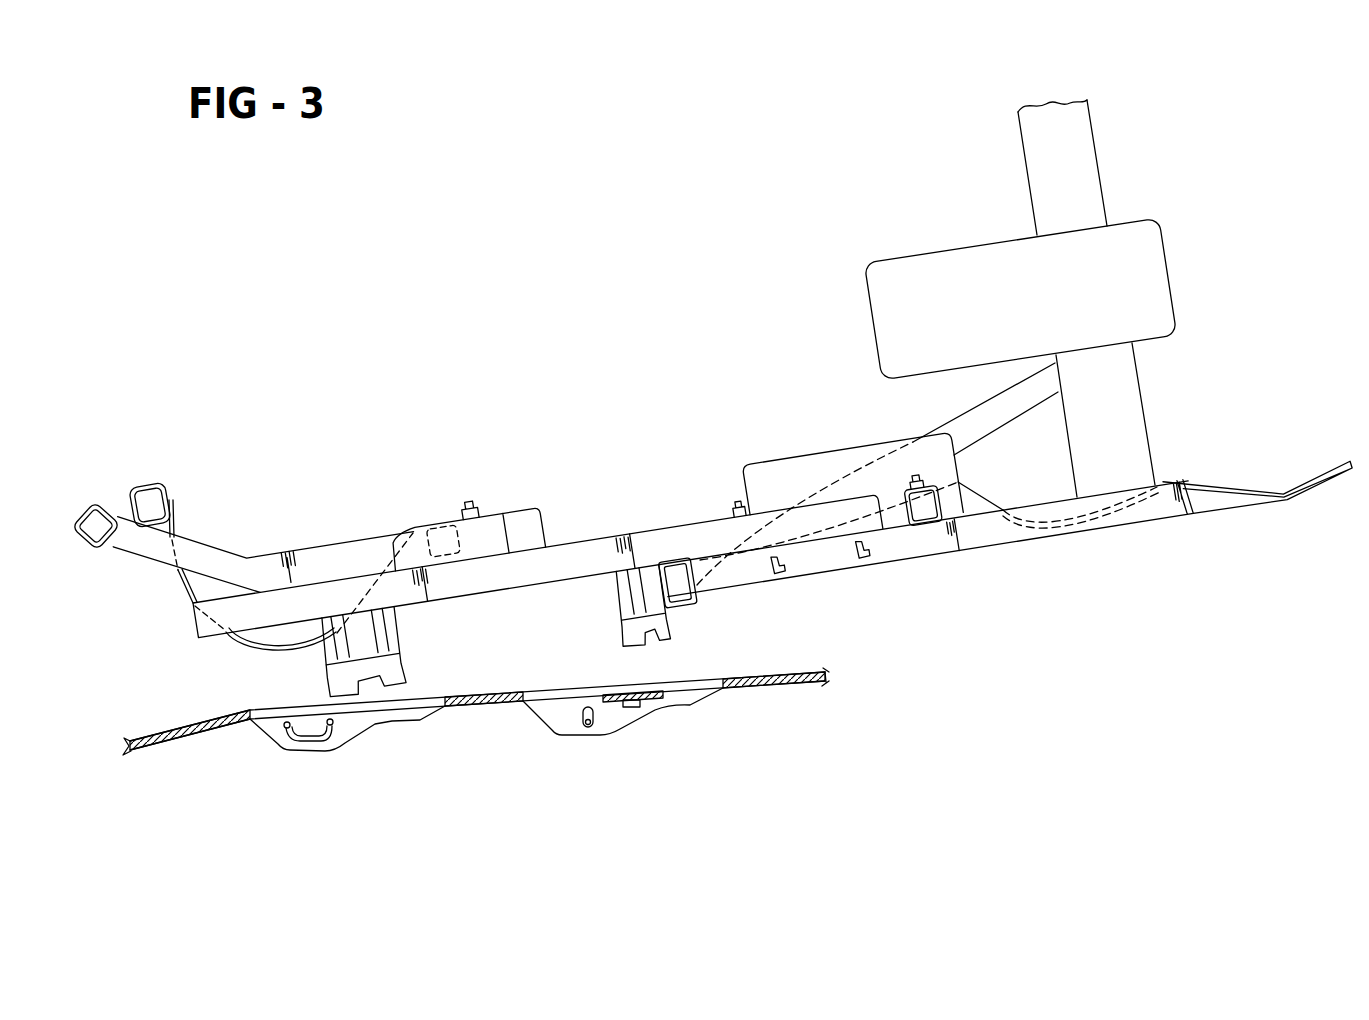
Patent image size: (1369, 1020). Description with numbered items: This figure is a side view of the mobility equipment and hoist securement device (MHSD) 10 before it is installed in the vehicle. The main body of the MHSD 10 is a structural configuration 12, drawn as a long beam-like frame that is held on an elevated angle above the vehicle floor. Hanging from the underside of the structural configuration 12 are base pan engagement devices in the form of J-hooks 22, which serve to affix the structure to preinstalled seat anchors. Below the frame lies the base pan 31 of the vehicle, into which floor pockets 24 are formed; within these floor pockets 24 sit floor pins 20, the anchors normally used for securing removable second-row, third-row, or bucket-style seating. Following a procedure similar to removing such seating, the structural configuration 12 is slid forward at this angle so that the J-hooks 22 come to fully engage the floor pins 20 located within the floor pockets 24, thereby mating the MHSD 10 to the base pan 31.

The mobility equipment and hoist securement device (MHSD) 10 is at (442, 394).
The structural configuration 12 is at (607, 538).
The floor pins 20 is at (333, 738).
The J-hooks 22 is at (400, 657).
The floor pockets 24 is at (407, 715).
The base pan 31 is at (822, 672).